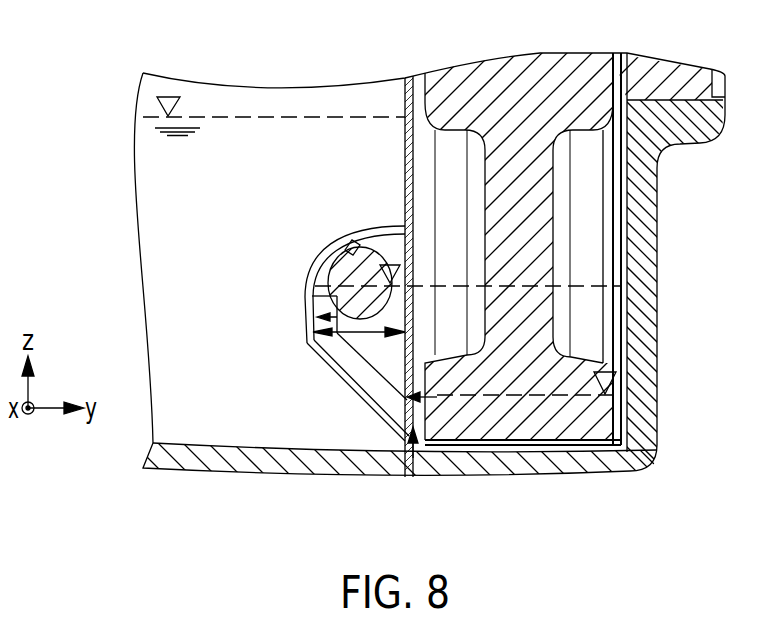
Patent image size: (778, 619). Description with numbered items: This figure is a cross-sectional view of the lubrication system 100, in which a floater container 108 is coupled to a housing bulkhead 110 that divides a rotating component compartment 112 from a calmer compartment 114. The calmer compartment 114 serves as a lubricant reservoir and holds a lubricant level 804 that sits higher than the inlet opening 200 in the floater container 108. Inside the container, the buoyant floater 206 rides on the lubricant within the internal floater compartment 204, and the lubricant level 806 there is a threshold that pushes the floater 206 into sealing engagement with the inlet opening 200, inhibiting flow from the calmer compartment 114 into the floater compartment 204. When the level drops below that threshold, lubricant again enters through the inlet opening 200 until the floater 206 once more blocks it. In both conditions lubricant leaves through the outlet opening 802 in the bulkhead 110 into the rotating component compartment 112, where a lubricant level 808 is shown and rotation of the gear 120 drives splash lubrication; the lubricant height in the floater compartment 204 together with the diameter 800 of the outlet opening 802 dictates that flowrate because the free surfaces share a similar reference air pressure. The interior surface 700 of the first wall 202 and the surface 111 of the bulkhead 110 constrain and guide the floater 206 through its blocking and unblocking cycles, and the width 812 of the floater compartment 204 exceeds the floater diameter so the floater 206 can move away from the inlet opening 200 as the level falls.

The lubrication system 100 is at (107, 148).
The calmer compartment 114 is at (163, 253).
The lubricant level 804 is at (168, 97).
The housing bulkhead 110 is at (397, 168).
The lubricant level 806 is at (393, 266).
The first wall 202 is at (318, 252).
The inlet opening 200 is at (337, 248).
The floater container 108 is at (296, 262).
The buoyant floater 206 is at (372, 258).
The interior surface 700 is at (312, 296).
The width 812 is at (336, 333).
The surface 111 is at (367, 376).
The internal floater compartment 204 is at (363, 378).
The diameter 800 is at (403, 397).
The outlet opening 802 is at (413, 428).
The gear 120 is at (510, 413).
The rotating component compartment 112 is at (583, 447).
The lubricant level 808 is at (606, 370).